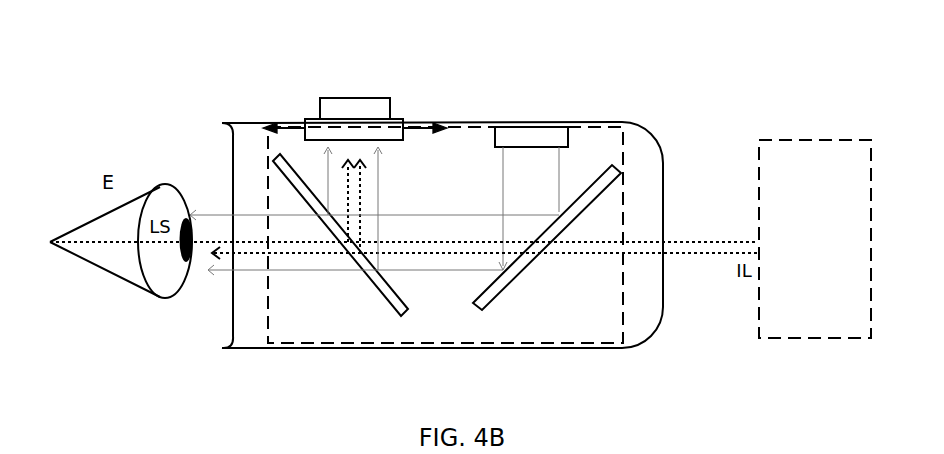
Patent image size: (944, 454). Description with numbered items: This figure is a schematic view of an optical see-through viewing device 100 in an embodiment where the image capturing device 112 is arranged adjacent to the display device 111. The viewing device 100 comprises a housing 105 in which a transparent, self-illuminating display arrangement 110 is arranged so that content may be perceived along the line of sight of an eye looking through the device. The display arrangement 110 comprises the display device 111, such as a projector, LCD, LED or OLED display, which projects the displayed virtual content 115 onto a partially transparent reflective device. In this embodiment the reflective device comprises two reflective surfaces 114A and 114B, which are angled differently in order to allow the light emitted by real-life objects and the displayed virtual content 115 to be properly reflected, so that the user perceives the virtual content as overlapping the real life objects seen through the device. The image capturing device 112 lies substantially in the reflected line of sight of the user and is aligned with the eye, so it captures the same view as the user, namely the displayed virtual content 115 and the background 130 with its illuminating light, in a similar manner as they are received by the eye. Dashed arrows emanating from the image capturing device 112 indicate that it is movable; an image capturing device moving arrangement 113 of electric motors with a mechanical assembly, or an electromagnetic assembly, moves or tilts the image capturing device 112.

The viewing device 100 is at (205, 101).
The housing 105 is at (283, 120).
The display arrangement 110 is at (540, 347).
The display device 111 is at (531, 137).
The image capturing device 112 is at (355, 129).
The image capturing device moving arrangement 113 is at (355, 108).
The reflective surface 114A is at (611, 165).
The reflective surface 114B is at (395, 316).
The displayed virtual content 115 is at (529, 208).
The background 130 is at (815, 239).